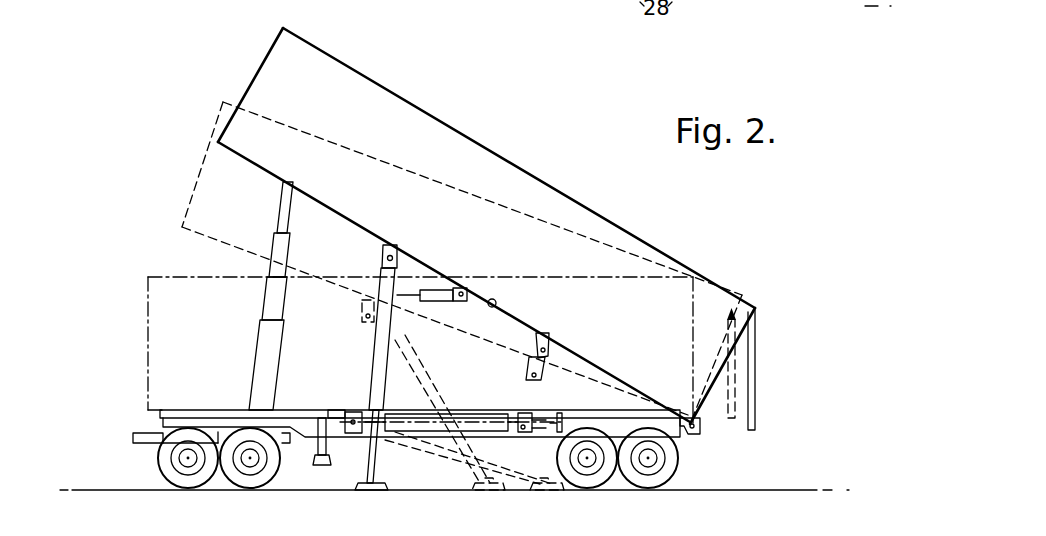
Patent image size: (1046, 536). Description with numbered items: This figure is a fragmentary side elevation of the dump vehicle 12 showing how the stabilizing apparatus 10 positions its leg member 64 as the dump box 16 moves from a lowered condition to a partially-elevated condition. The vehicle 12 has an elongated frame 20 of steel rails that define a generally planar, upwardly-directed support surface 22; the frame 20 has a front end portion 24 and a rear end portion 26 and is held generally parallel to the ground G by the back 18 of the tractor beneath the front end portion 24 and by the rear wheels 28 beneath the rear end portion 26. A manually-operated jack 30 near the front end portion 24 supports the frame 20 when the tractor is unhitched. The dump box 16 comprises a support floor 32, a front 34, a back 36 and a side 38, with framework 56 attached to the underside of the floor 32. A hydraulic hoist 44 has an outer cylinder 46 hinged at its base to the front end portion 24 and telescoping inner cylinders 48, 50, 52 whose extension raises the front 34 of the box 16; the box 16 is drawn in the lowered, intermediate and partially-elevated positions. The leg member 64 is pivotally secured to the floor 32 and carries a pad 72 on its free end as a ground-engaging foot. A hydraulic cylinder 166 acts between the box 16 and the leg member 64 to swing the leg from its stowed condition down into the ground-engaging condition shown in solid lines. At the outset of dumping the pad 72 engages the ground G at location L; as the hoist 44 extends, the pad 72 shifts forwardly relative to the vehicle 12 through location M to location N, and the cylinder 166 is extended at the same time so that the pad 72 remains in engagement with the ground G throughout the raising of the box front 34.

The stabilizing apparatus 10 is at (347, 478).
The dump vehicle 12 is at (266, 44).
The dump box 16 is at (312, 120).
The back of the tractor 18 is at (283, 490).
The elongated frame 20 is at (333, 407).
The support surface 22 is at (487, 411).
The front end portion 24 is at (160, 413).
The rear end portion 26 is at (690, 428).
The rear wheels 28 is at (631, 491).
The manually-operated jacks 30 is at (326, 466).
The support floor 32 is at (353, 222).
The front 34 is at (256, 72).
The back 36 is at (756, 364).
The side 38 is at (209, 283).
The hydraulic hoist 44 is at (231, 295).
The outer cylinder 46 is at (256, 365).
The telescoping inner cylinder 48 is at (268, 296).
The telescoping inner cylinder 50 is at (271, 243).
The telescoping inner cylinder 52 is at (278, 195).
The framework 56 is at (497, 304).
The leg member 64 is at (366, 362).
The pad 72 is at (368, 489).
The hydraulic cylinder 166 is at (440, 302).
The ground G is at (766, 490).
The location N is at (381, 494).
The location M is at (498, 492).
The location L is at (560, 494).